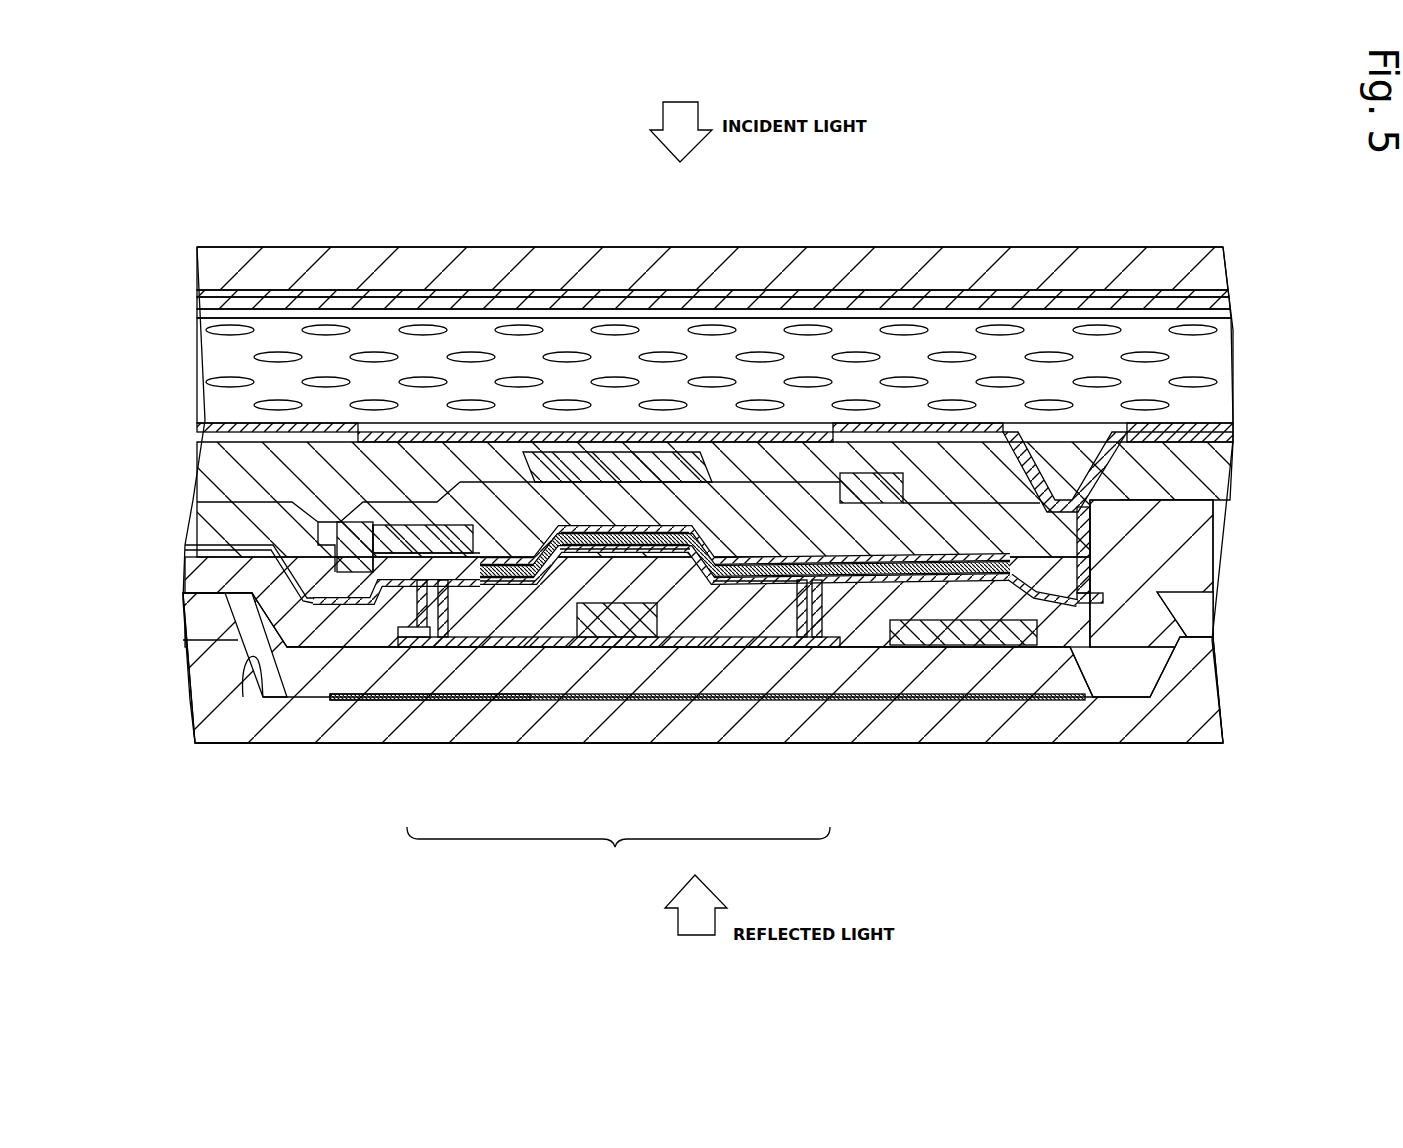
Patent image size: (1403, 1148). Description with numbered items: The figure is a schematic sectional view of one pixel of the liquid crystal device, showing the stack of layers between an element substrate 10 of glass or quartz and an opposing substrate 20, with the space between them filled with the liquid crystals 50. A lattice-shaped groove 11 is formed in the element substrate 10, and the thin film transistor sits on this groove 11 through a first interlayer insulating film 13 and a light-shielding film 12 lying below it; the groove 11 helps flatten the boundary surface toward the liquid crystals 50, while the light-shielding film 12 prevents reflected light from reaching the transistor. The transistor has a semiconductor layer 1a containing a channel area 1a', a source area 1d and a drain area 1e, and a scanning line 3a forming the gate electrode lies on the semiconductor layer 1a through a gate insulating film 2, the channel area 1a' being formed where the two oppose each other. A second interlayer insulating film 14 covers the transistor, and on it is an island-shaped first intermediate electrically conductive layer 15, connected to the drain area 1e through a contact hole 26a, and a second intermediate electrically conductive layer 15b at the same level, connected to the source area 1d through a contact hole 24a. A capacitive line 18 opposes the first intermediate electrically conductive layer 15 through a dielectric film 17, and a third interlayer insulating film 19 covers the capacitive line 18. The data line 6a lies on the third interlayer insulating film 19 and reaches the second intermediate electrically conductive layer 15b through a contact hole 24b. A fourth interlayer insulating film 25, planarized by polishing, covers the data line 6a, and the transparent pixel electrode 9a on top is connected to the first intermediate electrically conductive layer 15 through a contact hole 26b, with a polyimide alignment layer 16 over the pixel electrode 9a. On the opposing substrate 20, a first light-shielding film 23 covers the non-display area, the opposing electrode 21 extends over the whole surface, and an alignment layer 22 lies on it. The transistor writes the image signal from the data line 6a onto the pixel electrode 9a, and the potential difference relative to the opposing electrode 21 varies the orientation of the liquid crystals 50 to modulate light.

The semiconductor layer 1a is at (708, 709).
The channel area 1a' is at (629, 686).
The source area 1d is at (495, 610).
The drain area 1e is at (805, 610).
The gate insulating film 2 is at (740, 620).
The scanning line 3a is at (610, 620).
The data line 6a is at (650, 467).
The pixel electrode 9a is at (895, 430).
The element substrate 10 is at (553, 720).
The groove 11 is at (262, 700).
The light-shielding film 12 is at (455, 630).
The first interlayer insulating film 13 is at (362, 620).
The second interlayer insulating film 14 is at (322, 655).
The first intermediate electrically conductive layer 15 is at (948, 600).
The second intermediate electrically conductive layer 15b is at (345, 702).
The alignment layer 16 is at (768, 438).
The dielectric film 17 is at (985, 610).
The capacitive line 18 is at (468, 520).
The third interlayer insulating film 19 is at (571, 503).
The opposing substrate 20 is at (1213, 272).
The opposing electrode 21 is at (1230, 303).
The alignment layer 22 is at (1233, 327).
The first light-shielding film 23 is at (1230, 293).
The contact hole 24a is at (430, 600).
The contact hole 24b is at (338, 572).
The fourth interlayer insulating film 25 is at (307, 457).
The contact hole 26a is at (857, 600).
The contact hole 26b is at (1077, 520).
The liquid crystals 50 is at (993, 335).